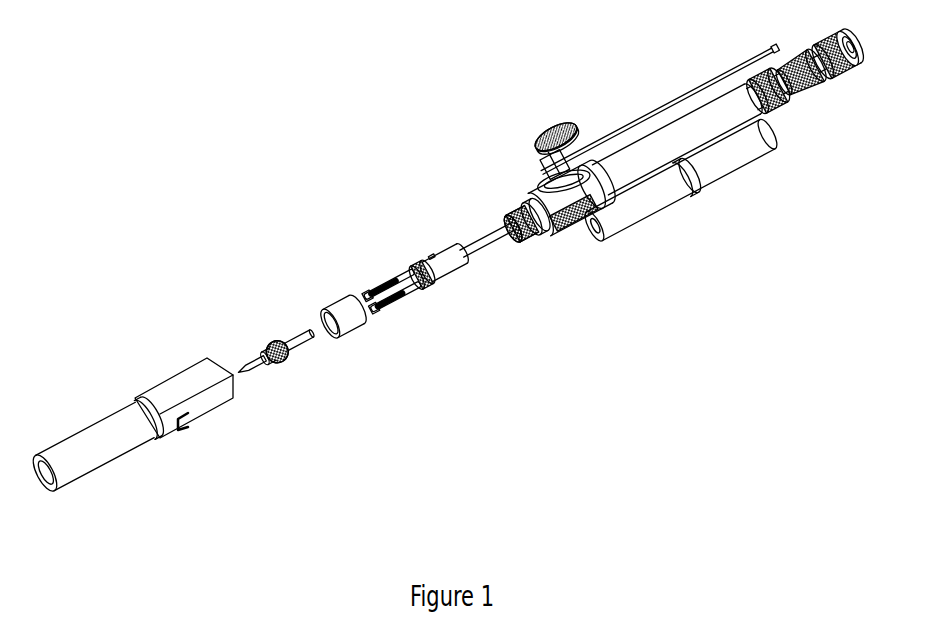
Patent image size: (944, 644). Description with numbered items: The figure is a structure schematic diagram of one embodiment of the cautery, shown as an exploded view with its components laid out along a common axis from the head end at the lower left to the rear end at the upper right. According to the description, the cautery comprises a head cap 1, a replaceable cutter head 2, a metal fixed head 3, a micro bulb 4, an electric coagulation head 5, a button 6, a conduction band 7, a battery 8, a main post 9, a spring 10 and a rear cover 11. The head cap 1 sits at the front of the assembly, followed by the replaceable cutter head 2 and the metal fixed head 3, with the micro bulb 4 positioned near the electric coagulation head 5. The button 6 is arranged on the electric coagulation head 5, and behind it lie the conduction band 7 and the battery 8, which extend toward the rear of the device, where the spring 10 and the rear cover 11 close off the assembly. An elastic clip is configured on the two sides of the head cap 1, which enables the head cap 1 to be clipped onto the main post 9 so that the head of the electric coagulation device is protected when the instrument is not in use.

The head cap 1 is at (205, 412).
The replaceable cutter head 2 is at (287, 370).
The metal fixed head 3 is at (348, 333).
The micro bulb 4 is at (387, 302).
The electric coagulation head 5 is at (448, 277).
The button 6 is at (563, 227).
The conduction band 7 is at (612, 151).
The battery 8 is at (643, 218).
The main post 9 is at (677, 148).
The spring 10 is at (802, 87).
The rear cover 11 is at (840, 80).